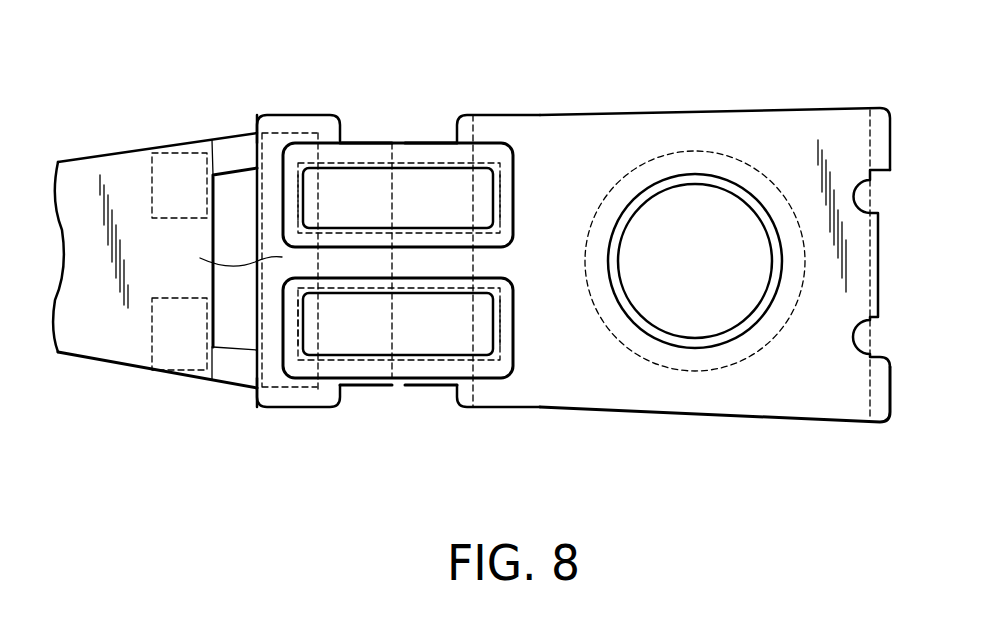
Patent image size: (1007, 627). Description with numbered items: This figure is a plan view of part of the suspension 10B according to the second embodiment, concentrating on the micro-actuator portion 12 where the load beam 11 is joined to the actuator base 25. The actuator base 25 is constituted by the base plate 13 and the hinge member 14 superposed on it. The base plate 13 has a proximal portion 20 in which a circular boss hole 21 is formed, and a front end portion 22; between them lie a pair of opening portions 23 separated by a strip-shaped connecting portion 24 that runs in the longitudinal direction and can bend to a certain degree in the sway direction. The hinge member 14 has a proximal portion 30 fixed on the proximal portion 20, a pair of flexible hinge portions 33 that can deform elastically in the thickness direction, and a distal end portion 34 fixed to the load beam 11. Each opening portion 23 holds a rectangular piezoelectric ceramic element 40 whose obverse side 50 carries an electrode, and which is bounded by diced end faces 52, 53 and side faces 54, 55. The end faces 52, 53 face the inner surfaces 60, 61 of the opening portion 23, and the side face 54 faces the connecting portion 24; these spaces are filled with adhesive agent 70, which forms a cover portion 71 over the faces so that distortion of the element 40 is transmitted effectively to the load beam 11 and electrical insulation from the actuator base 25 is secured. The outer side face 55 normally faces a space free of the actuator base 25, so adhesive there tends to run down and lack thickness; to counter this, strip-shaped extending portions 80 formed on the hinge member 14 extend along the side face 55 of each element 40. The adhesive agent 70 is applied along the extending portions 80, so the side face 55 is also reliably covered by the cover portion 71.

The suspension 10B is at (160, 80).
The load beam 11 is at (84, 178).
The micro-actuator portion 12 is at (560, 162).
The base plate 13 is at (813, 105).
The hinge member 14 is at (267, 130).
The proximal portion 20 is at (643, 147).
The boss hole 21 is at (713, 200).
The front end portion 22 is at (228, 256).
The opening portion 23 is at (425, 123).
The connecting portion 24 is at (358, 260).
The actuator base 25 is at (543, 417).
The proximal portion 30 is at (677, 393).
The hinge portion 33 is at (223, 153).
The distal end portion 34 is at (158, 182).
The piezoelectric ceramic element 40 is at (412, 197).
The obverse side 50 is at (457, 213).
The end face 52 is at (497, 185).
The end face 53 is at (283, 203).
The side face 54 is at (400, 278).
The side face 55 is at (377, 137).
The inner surface 60 is at (500, 158).
The inner surface 61 is at (293, 133).
The adhesive agent 70 is at (323, 125).
The cover portion 71 is at (462, 158).
The extending portion 80 is at (448, 130).